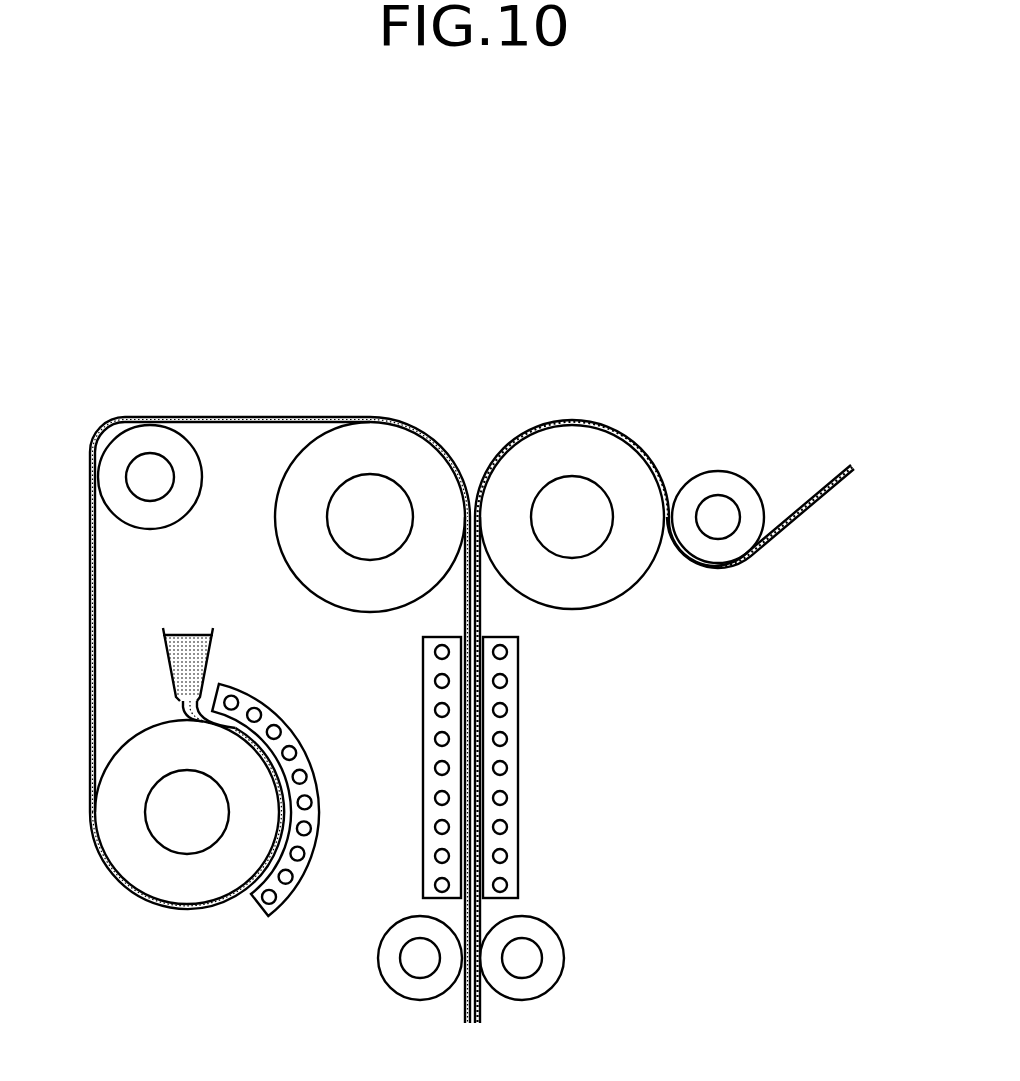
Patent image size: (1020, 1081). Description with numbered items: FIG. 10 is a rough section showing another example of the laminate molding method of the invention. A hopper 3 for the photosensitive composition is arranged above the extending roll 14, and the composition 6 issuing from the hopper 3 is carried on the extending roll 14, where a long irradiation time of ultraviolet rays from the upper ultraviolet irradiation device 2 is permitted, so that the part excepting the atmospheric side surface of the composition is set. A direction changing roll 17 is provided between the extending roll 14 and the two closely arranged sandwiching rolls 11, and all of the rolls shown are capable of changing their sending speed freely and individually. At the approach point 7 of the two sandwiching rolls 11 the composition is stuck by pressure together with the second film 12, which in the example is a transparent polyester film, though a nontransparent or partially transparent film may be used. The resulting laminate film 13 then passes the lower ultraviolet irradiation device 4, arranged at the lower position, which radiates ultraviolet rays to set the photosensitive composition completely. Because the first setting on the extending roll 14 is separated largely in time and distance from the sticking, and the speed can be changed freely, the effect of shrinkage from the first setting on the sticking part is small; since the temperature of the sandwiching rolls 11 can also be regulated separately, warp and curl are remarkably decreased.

The upper ultraviolet irradiation device 2 is at (308, 826).
The hopper 3 is at (165, 645).
The lower ultraviolet irradiation device 4 is at (437, 715).
The thermoplastic resin powder 6 is at (190, 657).
The approach point 7 is at (473, 493).
The sandwiching rolls 11 is at (295, 521).
The second film 12 is at (623, 432).
The laminate film 13 is at (465, 600).
The extending roll 14 is at (130, 862).
The direction changing roll 17 is at (150, 437).